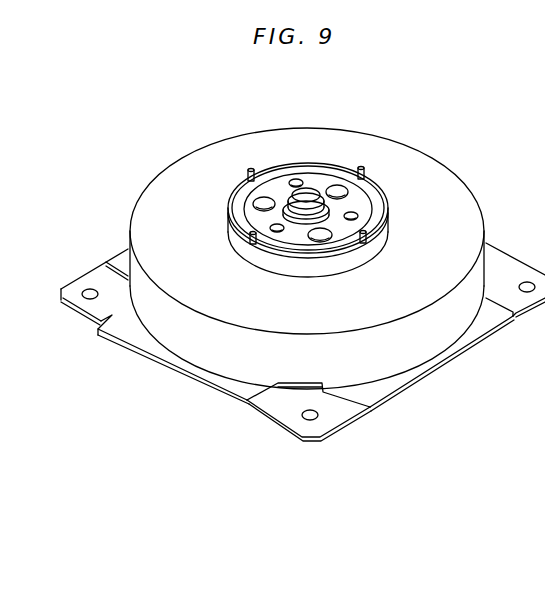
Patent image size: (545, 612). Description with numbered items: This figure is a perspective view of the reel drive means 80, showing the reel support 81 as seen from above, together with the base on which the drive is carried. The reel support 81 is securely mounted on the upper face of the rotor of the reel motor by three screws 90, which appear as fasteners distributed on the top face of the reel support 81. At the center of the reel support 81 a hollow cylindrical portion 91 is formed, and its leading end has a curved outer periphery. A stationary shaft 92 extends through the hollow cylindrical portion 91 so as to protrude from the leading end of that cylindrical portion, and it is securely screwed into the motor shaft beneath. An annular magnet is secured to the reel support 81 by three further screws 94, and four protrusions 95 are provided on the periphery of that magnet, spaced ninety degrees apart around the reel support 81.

The motor housing body 80 is at (481, 186).
The reel support 81 is at (240, 197).
The screws 90 is at (258, 206).
The hollow cylindrical portion 91 is at (330, 210).
The stationary shaft 92 is at (310, 192).
The screws 94 is at (293, 180).
The protrusions 95 is at (246, 174).